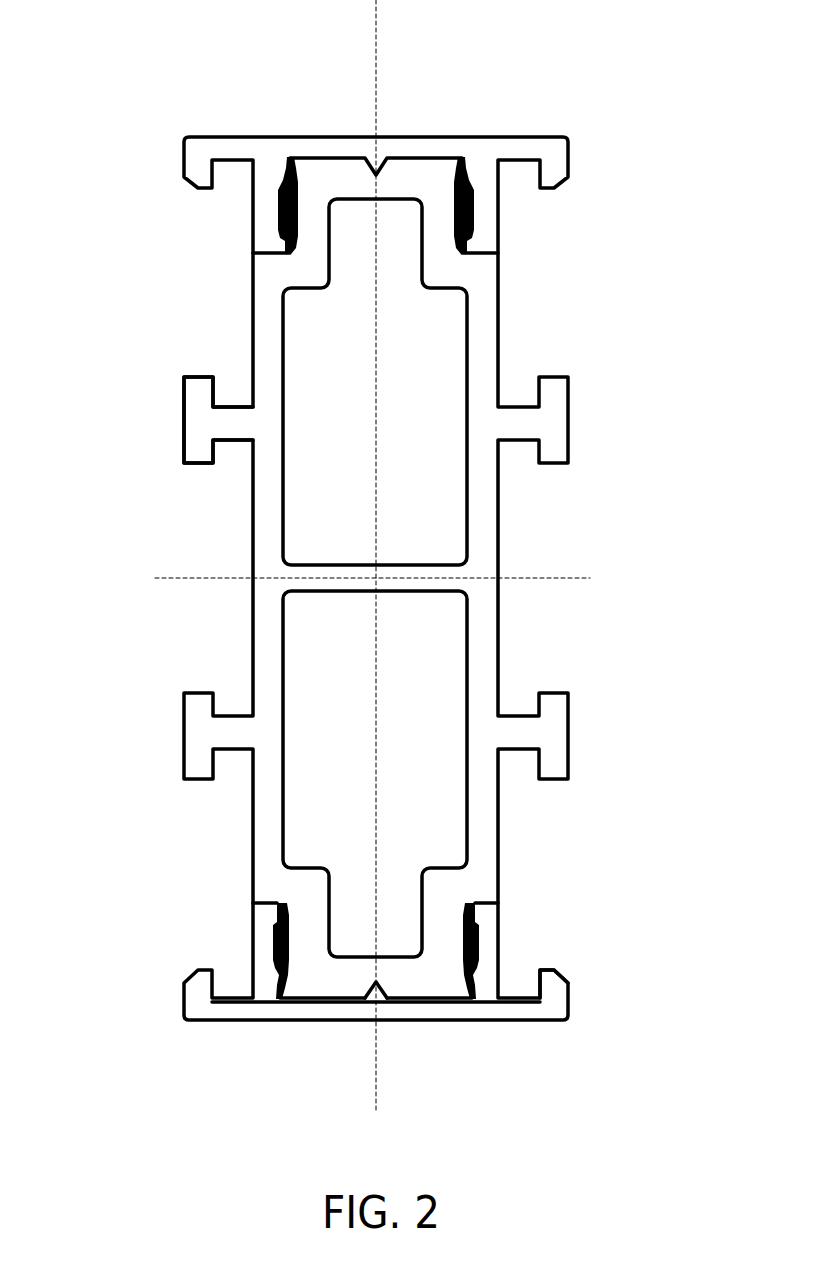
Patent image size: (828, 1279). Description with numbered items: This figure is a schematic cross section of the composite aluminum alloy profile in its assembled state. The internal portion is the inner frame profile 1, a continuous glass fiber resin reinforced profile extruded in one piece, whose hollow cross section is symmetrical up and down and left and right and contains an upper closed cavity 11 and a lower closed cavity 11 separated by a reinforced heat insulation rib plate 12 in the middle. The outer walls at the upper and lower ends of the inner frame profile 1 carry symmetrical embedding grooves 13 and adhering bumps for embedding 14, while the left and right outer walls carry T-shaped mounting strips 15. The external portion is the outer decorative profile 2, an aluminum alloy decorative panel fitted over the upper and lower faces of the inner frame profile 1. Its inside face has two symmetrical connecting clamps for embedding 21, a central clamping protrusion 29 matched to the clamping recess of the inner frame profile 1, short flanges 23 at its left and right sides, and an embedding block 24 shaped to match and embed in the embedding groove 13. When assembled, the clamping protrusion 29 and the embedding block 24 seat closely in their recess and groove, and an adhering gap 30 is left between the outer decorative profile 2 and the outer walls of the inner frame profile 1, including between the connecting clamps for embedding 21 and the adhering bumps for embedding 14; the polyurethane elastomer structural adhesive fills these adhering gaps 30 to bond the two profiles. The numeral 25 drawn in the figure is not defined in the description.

The inner frame profile 1 is at (478, 655).
The outer decorative profile 2 is at (268, 1010).
The closed cavity 11 is at (410, 352).
The reinforced heat insulation rib plate 12 is at (420, 585).
The embedding groove 13 is at (283, 218).
The adhering bump for embedding 14 is at (452, 172).
The T-shaped mounting strip 15 is at (207, 421).
The connecting clamp for embedding 21 is at (487, 940).
The short flange 23 is at (547, 996).
The embedding block 24 is at (270, 910).
The lower inner wall 25 is at (301, 1003).
The clamping protrusion 29 is at (375, 998).
The adhering gap 30 is at (473, 220).